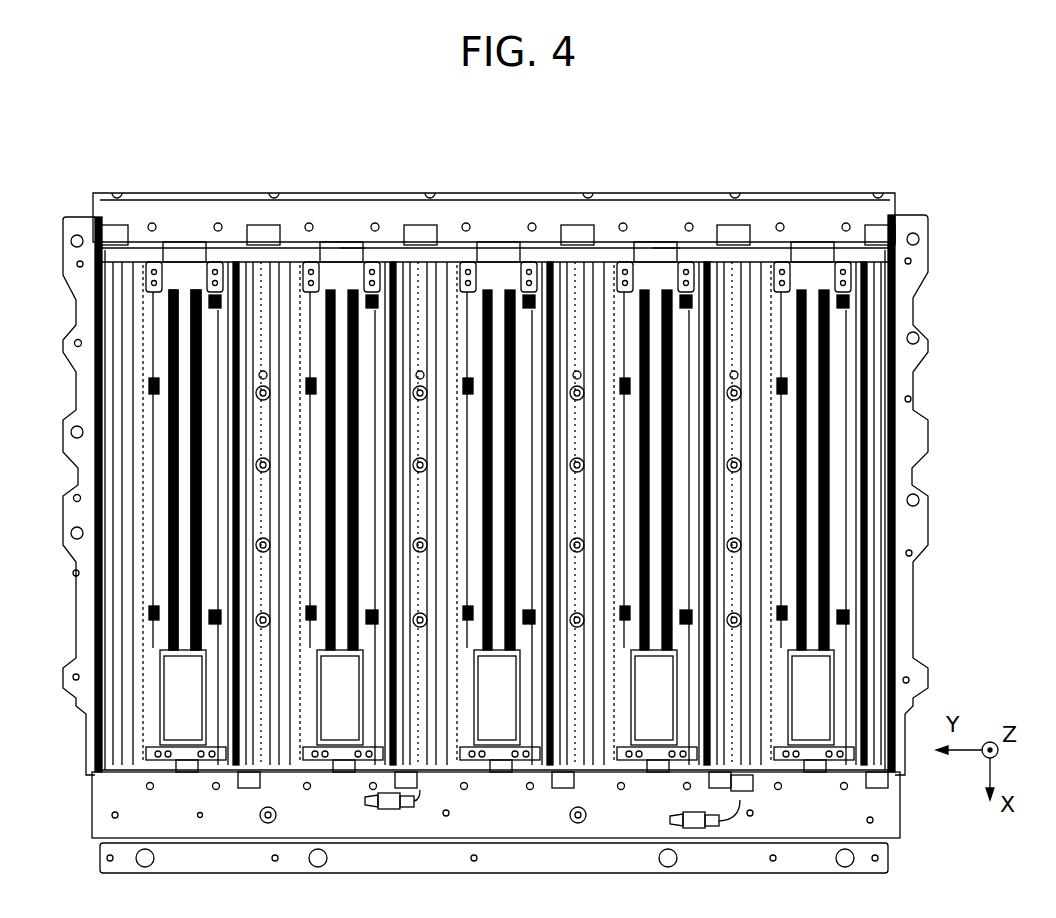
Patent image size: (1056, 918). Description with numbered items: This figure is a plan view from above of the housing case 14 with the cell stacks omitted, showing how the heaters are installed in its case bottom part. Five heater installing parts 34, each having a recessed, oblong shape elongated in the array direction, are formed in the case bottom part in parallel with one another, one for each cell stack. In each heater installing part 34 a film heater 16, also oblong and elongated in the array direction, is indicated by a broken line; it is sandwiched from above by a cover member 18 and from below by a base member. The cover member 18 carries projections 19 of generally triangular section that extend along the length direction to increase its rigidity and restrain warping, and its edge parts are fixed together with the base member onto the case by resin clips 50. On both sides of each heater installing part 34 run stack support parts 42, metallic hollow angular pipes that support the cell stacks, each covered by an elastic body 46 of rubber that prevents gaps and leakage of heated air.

The housing case 14 is at (522, 193).
The heater 16 is at (352, 200).
The cover member 18 is at (185, 283).
The projections 19 is at (172, 268).
The heater installing part 34 is at (335, 275).
The stack support part 42 is at (420, 270).
The elastic body 46 is at (447, 242).
The resin clip 50 is at (738, 368).